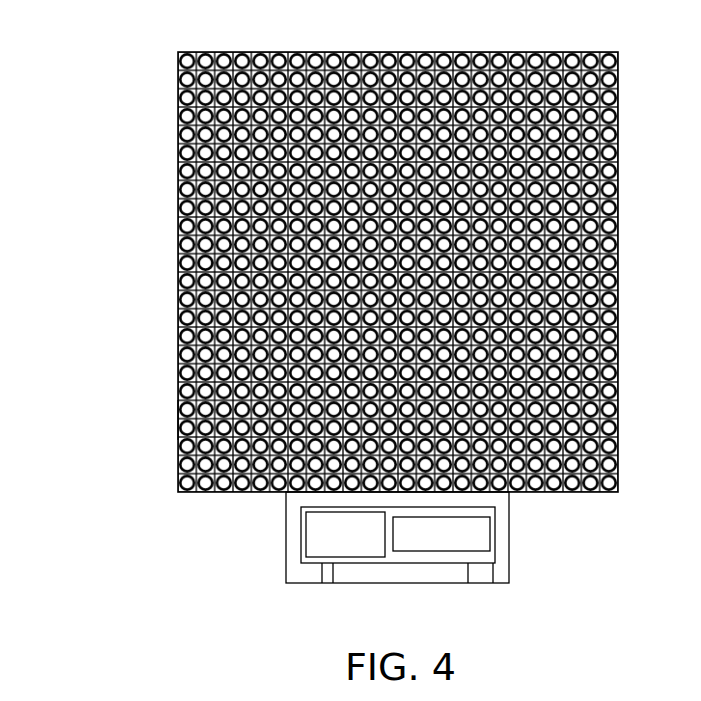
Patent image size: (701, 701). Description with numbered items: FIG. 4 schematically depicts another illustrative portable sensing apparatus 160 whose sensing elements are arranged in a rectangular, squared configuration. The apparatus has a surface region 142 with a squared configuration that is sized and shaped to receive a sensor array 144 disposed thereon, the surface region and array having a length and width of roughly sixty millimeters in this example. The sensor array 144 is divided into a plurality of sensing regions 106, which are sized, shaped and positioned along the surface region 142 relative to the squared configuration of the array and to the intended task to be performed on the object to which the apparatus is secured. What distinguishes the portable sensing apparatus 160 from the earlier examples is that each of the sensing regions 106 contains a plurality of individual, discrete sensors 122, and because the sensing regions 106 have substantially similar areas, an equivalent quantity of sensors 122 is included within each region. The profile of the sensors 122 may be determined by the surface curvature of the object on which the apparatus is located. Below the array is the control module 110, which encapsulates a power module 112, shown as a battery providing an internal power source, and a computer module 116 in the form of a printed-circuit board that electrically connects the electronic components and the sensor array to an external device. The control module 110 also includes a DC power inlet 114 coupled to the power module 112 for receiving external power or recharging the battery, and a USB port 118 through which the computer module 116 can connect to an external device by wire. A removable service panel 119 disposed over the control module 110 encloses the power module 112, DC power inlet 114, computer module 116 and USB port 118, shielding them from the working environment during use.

The portable sensing apparatus 160 is at (342, 328).
The surface region 142 is at (342, 272).
The sensor array 144 is at (178, 422).
The sensors 122 is at (280, 137).
The sensing regions 106 is at (522, 133).
The control module 110 is at (388, 562).
The removable service panel 119 is at (453, 547).
The power module 112 is at (297, 531).
The computer module 116 is at (491, 523).
The DC power inlet 114 is at (333, 573).
The USB port 118 is at (467, 573).